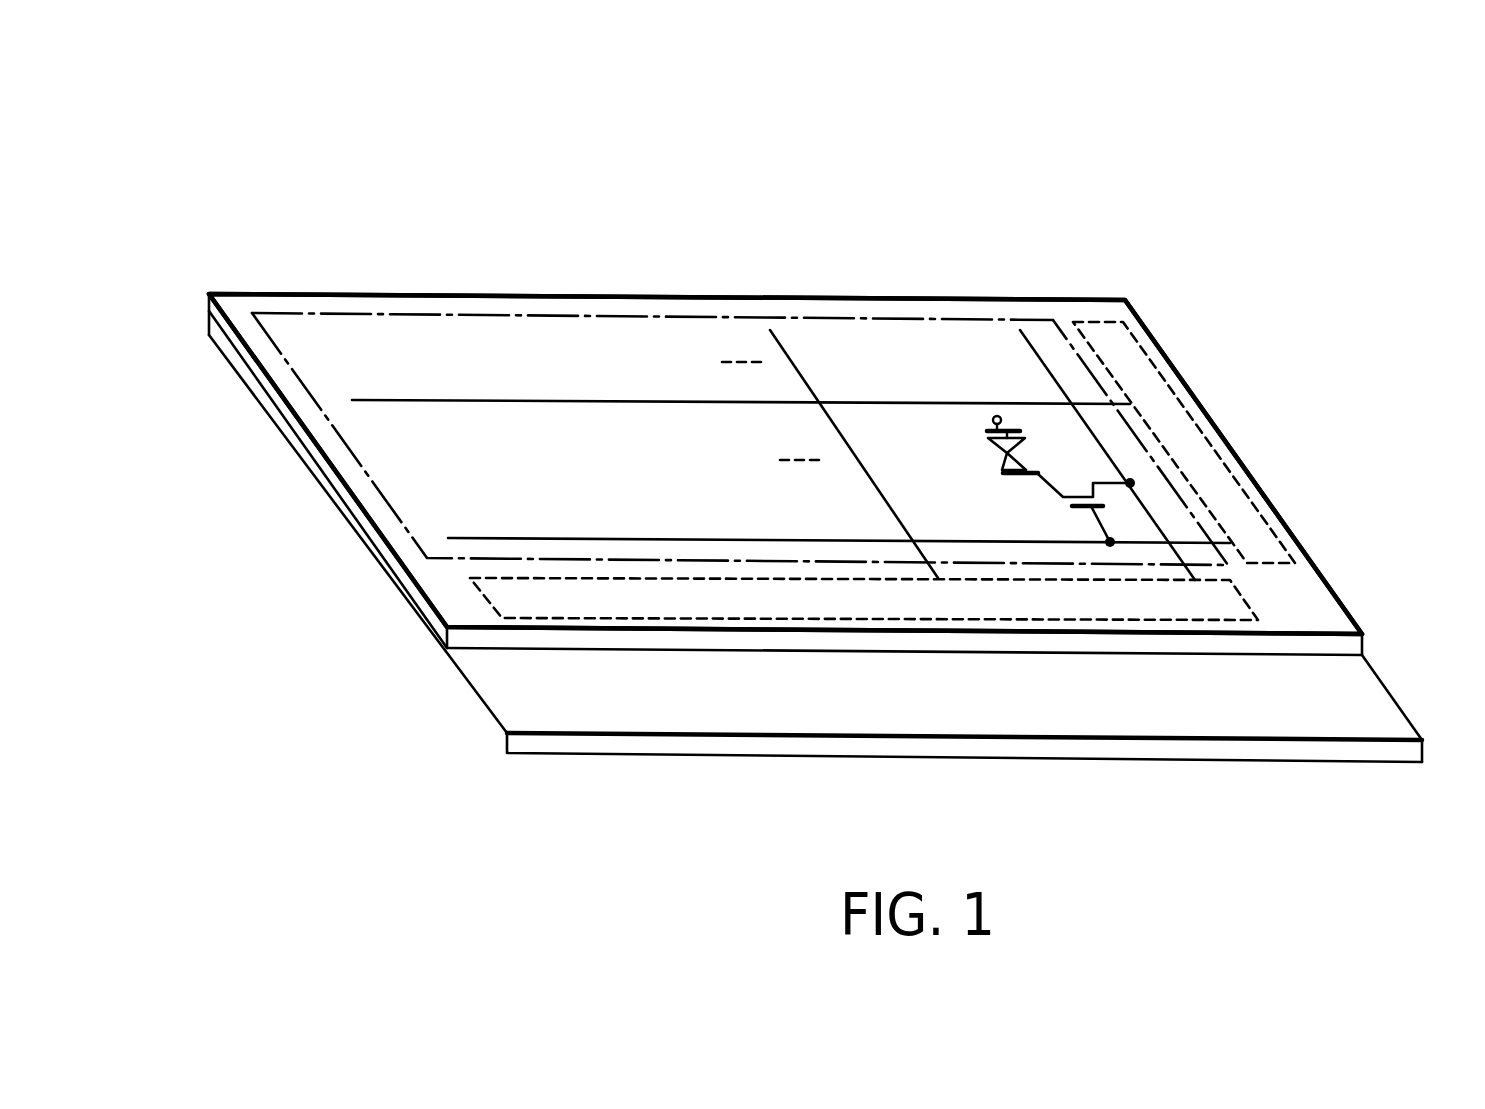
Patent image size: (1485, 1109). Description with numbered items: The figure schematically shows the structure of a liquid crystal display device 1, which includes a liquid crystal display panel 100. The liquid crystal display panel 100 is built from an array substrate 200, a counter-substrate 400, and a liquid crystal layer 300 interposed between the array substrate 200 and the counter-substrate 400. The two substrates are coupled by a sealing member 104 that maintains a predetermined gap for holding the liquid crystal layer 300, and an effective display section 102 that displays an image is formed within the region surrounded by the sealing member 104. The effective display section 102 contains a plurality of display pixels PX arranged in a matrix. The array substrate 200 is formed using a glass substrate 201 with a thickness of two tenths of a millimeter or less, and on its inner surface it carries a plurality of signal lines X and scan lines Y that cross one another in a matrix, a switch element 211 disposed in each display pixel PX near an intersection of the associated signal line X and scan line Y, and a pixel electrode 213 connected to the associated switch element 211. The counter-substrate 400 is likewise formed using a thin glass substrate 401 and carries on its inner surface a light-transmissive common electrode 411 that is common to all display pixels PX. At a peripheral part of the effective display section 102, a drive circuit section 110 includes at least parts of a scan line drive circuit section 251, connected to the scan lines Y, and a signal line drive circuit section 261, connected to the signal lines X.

The liquid crystal display device 1 is at (530, 200).
The counter-substrate 400 is at (192, 278).
The array substrate 200 is at (190, 348).
The glass substrate 401 is at (1336, 618).
The drive circuit section 110 is at (493, 686).
The glass substrate 201 is at (1378, 698).
The liquid crystal display panel 100 is at (1018, 318).
The sealing member 104 is at (828, 318).
The effective display section 102 is at (745, 328).
The signal line X is at (1020, 330).
The scan line Y is at (534, 538).
The display pixel PX is at (1050, 446).
The common electrode 411 is at (985, 428).
The liquid crystal layer 300 is at (1003, 452).
The pixel electrode 213 is at (1004, 473).
The switch element 211 is at (1041, 513).
The scan line drive circuit section 251 is at (1258, 488).
The signal line drive circuit section 261 is at (1250, 602).